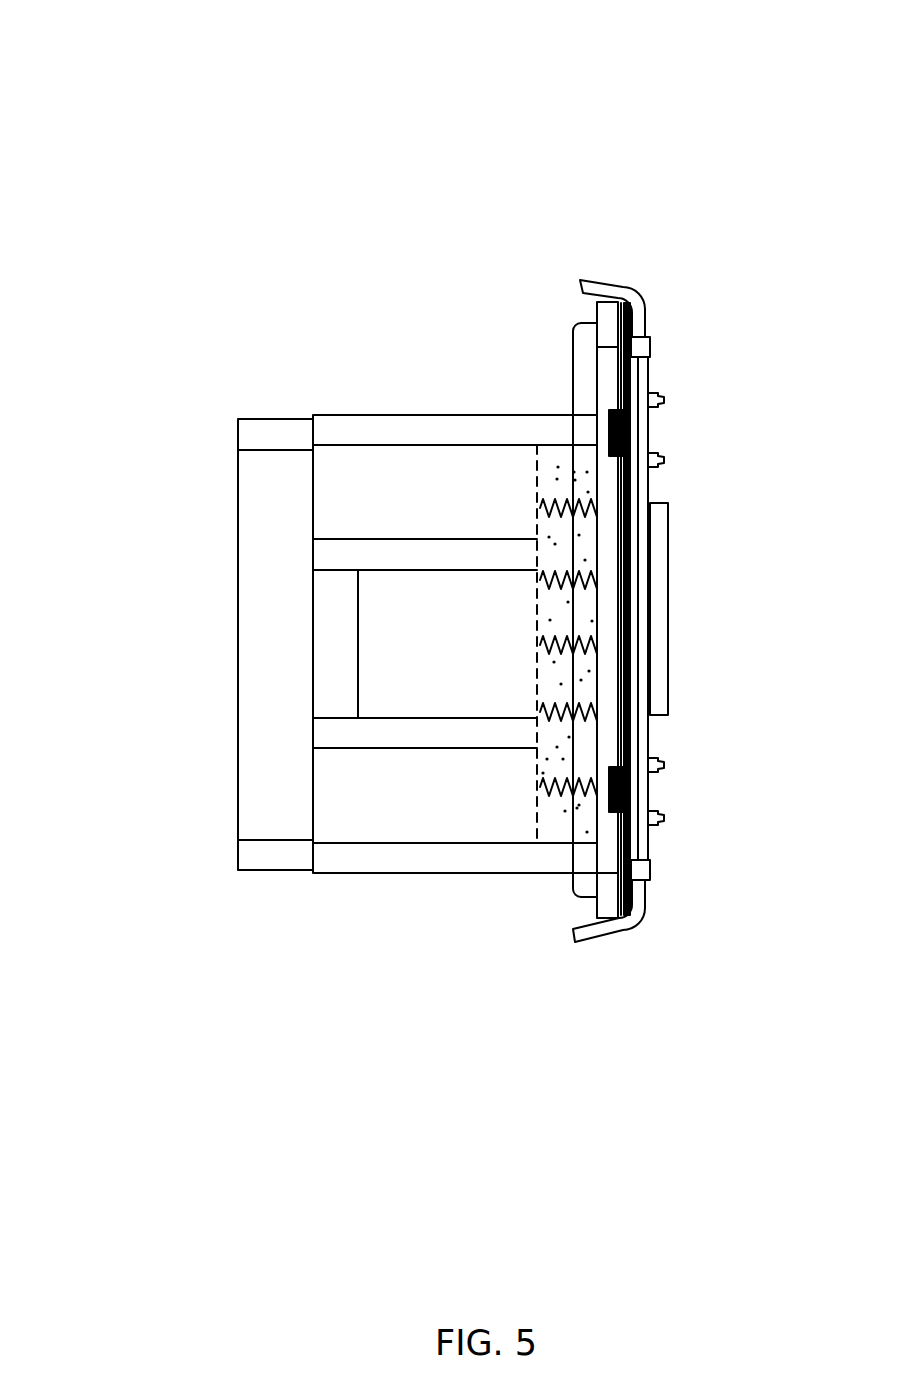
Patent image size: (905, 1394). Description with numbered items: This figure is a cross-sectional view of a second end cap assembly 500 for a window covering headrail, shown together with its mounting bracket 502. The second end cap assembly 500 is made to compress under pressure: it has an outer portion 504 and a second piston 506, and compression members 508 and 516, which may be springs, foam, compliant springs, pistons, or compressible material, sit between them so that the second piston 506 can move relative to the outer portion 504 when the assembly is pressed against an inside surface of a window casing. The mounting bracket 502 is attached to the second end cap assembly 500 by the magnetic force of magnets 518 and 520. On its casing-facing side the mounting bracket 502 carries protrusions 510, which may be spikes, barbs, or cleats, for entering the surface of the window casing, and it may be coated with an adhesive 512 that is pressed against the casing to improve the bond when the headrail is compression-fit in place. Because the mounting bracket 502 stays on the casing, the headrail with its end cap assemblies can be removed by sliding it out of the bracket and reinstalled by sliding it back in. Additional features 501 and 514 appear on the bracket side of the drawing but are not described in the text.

The second end cap assembly 500 is at (128, 68).
The lower mounting flange 501 is at (602, 930).
The mounting bracket 502 is at (601, 288).
The outer portion 504 is at (418, 458).
The second piston 506 is at (286, 468).
The compression member 508 is at (507, 588).
The protrusions 510 is at (665, 400).
The adhesive 512 is at (657, 607).
The mounting strip 514 is at (643, 372).
The compression member 516 is at (540, 782).
The magnet 518 is at (623, 457).
The magnet 520 is at (625, 768).